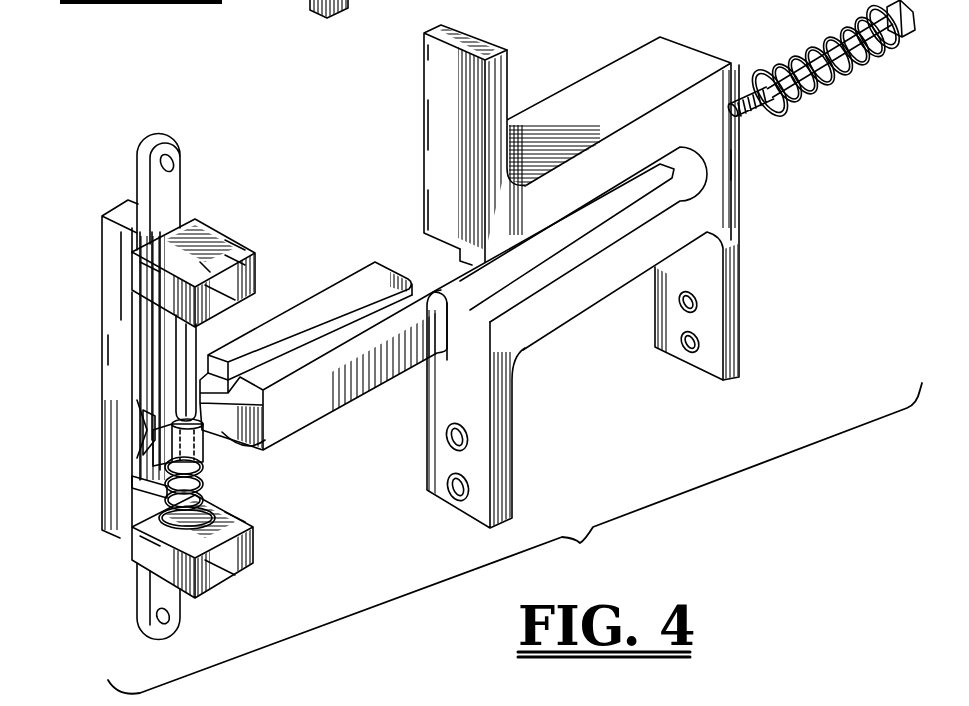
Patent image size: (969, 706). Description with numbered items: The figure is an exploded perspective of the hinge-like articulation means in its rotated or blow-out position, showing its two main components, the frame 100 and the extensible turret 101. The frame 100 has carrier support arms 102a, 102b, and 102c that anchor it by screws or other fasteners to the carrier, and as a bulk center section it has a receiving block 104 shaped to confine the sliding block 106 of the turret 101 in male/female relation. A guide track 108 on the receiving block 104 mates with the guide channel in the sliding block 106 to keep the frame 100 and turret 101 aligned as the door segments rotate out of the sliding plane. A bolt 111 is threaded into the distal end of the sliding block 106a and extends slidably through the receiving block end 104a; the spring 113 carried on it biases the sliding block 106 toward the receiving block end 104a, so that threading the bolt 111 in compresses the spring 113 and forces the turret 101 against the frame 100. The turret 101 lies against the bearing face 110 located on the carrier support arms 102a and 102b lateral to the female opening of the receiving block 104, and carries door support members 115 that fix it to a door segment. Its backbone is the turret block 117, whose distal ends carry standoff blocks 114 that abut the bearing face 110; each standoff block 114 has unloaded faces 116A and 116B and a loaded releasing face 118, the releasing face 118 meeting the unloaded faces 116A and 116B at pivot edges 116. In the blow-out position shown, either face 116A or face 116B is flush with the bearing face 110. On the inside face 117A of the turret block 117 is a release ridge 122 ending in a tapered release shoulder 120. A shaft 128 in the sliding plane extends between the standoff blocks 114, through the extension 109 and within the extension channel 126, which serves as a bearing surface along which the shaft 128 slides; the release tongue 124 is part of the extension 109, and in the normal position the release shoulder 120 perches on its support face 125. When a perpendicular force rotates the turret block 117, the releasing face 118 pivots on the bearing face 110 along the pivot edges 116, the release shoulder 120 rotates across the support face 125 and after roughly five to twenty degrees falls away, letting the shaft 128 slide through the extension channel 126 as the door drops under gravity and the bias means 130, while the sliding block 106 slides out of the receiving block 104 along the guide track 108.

The frame 100 is at (607, 118).
The extensible turret 101 is at (105, 185).
The carrier support arm 102a is at (502, 68).
The carrier support arm 102b is at (513, 483).
The carrier support arm 102c is at (739, 340).
The receiving block 104 is at (588, 305).
The receiving block end 104a is at (713, 165).
The sliding block 106 is at (343, 390).
The distal end of sliding block 106a is at (430, 327).
The guide track 108 is at (448, 260).
The extension 109 is at (203, 430).
The bearing face 110 is at (350, 300).
The bolt 111 is at (817, 50).
The spring 113 is at (830, 87).
The standoff block 114 is at (201, 228).
The door support member 115 is at (170, 178).
The pivot edge 116 is at (203, 281).
The unloaded face 116A is at (153, 278).
The unloaded face 116B is at (242, 250).
The loaded releasing face 118 is at (238, 301).
The turret block 117 is at (118, 355).
The inside face of turret block 117A is at (150, 480).
The tapered release shoulder 120 is at (150, 436).
The release ridge 122 is at (143, 385).
The release tongue 124 is at (152, 457).
The support face 125 is at (148, 412).
The extension channel 126 is at (186, 450).
The shaft 128 is at (184, 335).
The bias means 130 is at (205, 482).